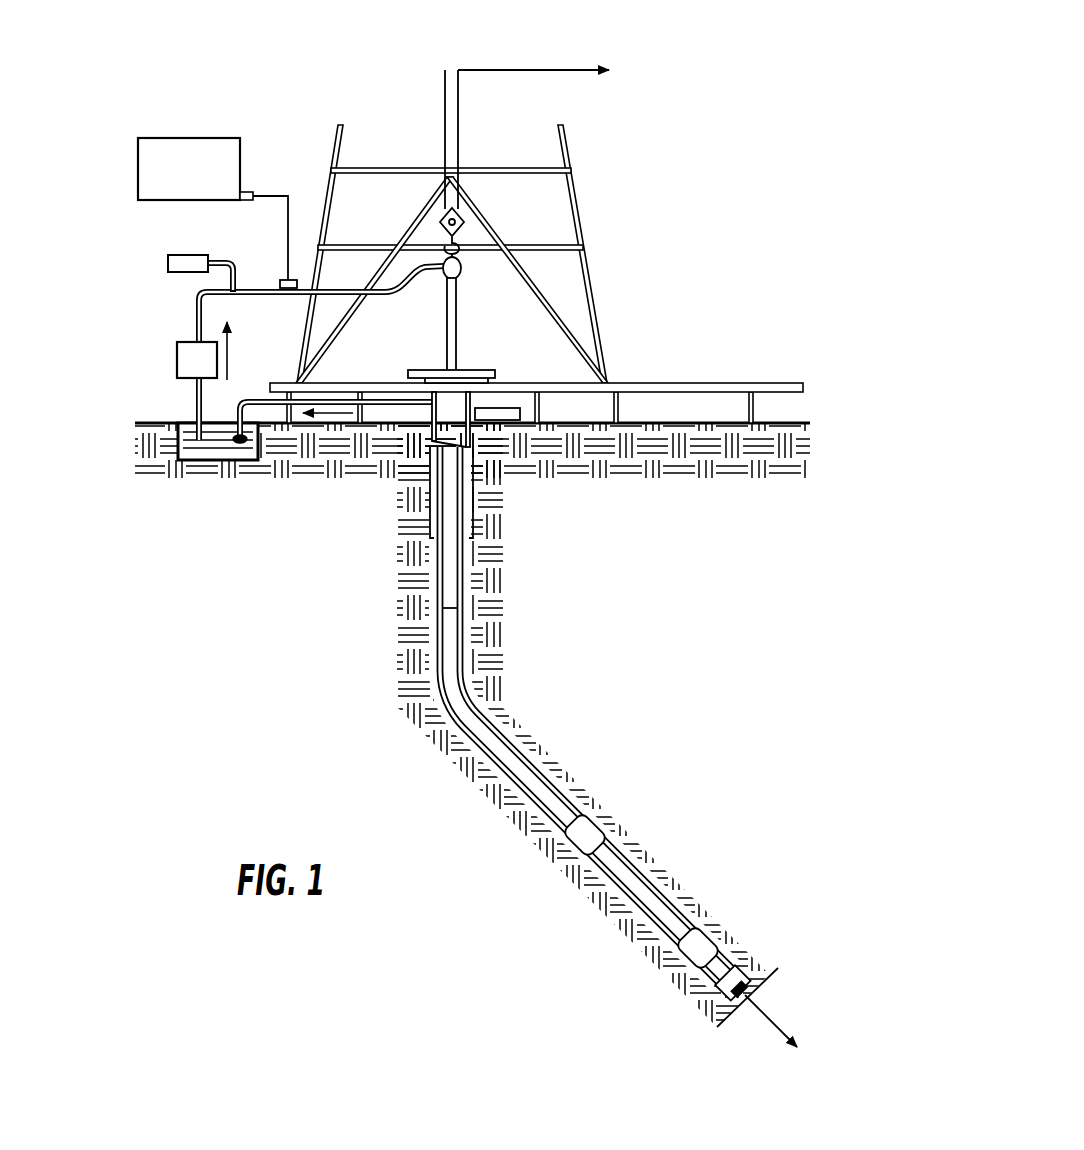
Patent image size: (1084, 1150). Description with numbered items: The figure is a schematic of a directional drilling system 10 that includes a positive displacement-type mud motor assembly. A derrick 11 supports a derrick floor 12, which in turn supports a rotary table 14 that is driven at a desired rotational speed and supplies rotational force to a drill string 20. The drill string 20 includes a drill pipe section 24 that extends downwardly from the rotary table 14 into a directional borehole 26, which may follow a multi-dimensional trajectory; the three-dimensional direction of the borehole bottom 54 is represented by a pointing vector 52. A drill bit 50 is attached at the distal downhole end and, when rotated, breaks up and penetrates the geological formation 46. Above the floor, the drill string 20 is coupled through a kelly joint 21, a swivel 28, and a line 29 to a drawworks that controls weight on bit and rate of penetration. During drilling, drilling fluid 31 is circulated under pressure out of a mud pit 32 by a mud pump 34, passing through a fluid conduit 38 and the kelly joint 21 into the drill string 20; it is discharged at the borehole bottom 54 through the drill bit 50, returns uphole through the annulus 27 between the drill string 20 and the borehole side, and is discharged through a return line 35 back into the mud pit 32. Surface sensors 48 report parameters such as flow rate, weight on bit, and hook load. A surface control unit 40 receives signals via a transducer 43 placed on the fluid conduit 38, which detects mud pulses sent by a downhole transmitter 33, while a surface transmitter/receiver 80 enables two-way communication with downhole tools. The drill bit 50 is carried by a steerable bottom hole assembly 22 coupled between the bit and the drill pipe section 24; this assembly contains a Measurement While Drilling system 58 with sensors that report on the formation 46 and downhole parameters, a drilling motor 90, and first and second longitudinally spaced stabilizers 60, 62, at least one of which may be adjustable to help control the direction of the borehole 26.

The directional drilling system 10 is at (262, 72).
The derrick 11 is at (580, 210).
The derrick floor 12 is at (607, 383).
The rotary table 14 is at (432, 370).
The drill string 20 is at (602, 668).
The kelly joint 21 is at (457, 355).
The bottom hole assembly 22 is at (702, 862).
The drill pipe section 24 is at (463, 580).
The directional borehole 26 is at (447, 712).
The annulus 27 is at (518, 745).
The swivel 28 is at (463, 272).
The line 29 is at (460, 110).
The drilling fluid 31 is at (185, 424).
The mud pit 32 is at (217, 455).
The downhole transmitter 33 is at (540, 775).
The mud pump 34 is at (177, 360).
The return line 35 is at (382, 406).
The fluid conduit 38 is at (260, 297).
The surface control unit 40 is at (138, 172).
The transducer 43 is at (280, 283).
The geological formation 46 is at (560, 853).
The surface sensors 48 is at (500, 408).
The drill bit 50 is at (768, 970).
The pointing vector 52 is at (768, 1022).
The borehole bottom 54 is at (717, 1007).
The Measurement While Drilling system 58 is at (617, 917).
The first stabilizer 60 is at (718, 938).
The second stabilizer 62 is at (603, 820).
The surface transmitter/receiver 80 is at (168, 265).
The drilling motor 90 is at (622, 848).